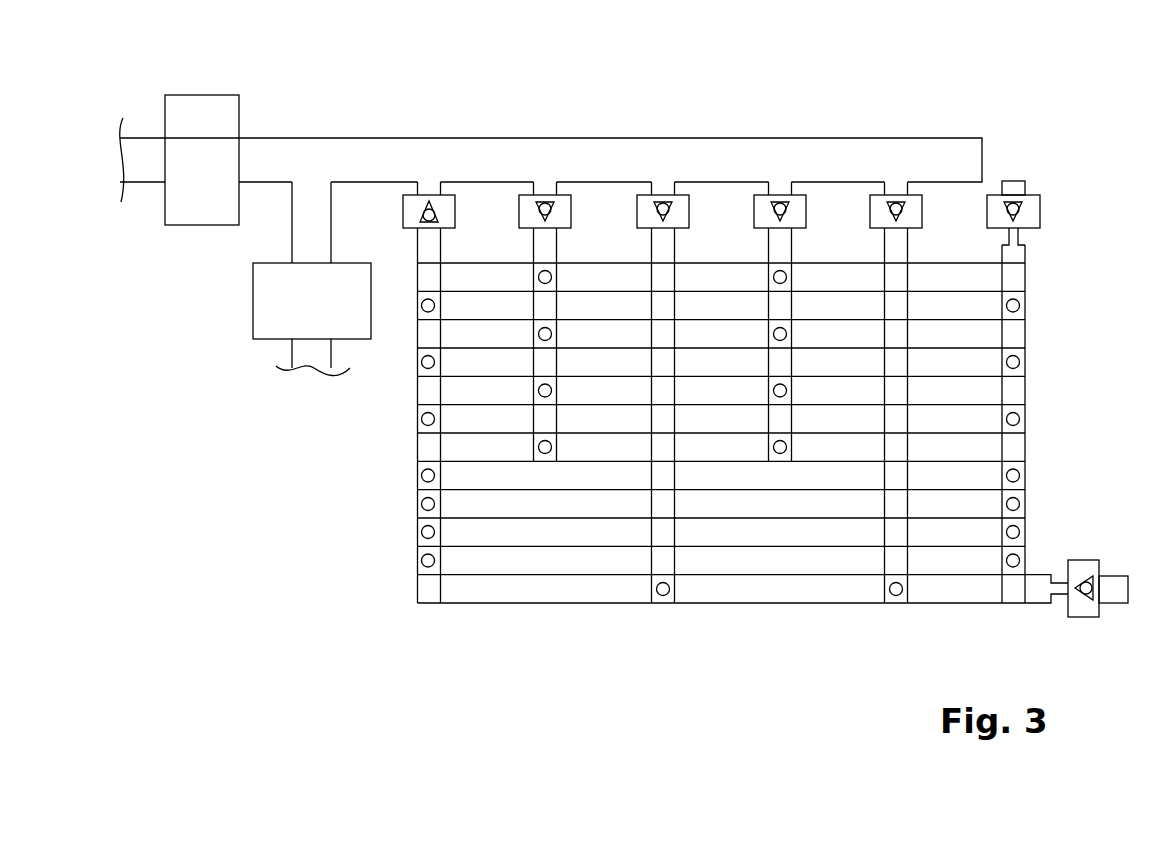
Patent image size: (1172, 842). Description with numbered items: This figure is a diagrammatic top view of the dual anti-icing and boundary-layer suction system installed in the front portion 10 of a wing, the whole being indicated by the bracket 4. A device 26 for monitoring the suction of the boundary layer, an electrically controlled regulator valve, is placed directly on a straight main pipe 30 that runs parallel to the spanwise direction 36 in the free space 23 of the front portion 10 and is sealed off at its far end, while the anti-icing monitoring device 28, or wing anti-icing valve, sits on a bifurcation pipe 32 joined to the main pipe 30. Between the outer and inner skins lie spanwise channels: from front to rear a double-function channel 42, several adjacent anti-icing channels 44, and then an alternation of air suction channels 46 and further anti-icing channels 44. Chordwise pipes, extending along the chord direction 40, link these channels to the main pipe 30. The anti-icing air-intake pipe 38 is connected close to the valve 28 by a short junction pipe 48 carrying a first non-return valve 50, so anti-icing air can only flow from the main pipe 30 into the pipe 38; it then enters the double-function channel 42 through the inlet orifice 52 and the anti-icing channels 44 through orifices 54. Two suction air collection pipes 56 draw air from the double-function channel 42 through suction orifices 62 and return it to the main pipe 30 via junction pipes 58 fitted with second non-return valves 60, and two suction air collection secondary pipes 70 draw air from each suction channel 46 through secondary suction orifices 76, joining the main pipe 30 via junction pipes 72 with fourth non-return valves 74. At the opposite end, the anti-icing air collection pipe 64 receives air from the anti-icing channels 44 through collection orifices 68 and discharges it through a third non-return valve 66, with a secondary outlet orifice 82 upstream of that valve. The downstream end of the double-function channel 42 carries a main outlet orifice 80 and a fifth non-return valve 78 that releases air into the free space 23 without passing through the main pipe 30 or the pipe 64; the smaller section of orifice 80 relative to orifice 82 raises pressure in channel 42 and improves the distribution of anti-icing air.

The aircraft 4 is at (1122, 47).
The front portion of the wing 10 is at (1036, 128).
The free space 23 is at (720, 237).
The device for monitoring the suction of the boundary layer 26 is at (202, 160).
The device for monitoring anti-icing 28 is at (312, 319).
The main pipe 30 is at (498, 138).
The bifurcation pipe 32 is at (332, 235).
The spanwise direction 36 is at (547, 671).
The anti-icing air-intake pipe 38 is at (416, 588).
The chord direction 40 is at (1098, 360).
The double-function channel 42 is at (541, 590).
The anti-icing channels 44 is at (496, 417).
The air suction channels 46 is at (430, 277).
The junction pipe 48 is at (426, 190).
The first non-return valve 50 is at (445, 210).
The anti-icing air inlet orifice 52 is at (429, 590).
The orifices 54 is at (421, 306).
The suction air collection pipes 56 is at (663, 607).
The junction pipe 58 is at (663, 190).
The second non-return valve 60 is at (637, 215).
The suction orifice 62 is at (670, 590).
The anti-icing air collection pipe 64 is at (1027, 533).
The third non-return valve 66 is at (1036, 211).
The anti-icing air collection orifices 68 is at (1020, 306).
The suction air collection secondary pipes 70 is at (549, 465).
The junction pipe 72 is at (545, 190).
The fourth non-return valve 74 is at (563, 212).
The secondary suction orifices 76 is at (552, 277).
The fifth non-return valve 78 is at (1082, 618).
The anti-icing air main outlet orifice 80 is at (1064, 588).
The anti-icing air secondary outlet orifice 82 is at (1022, 246).